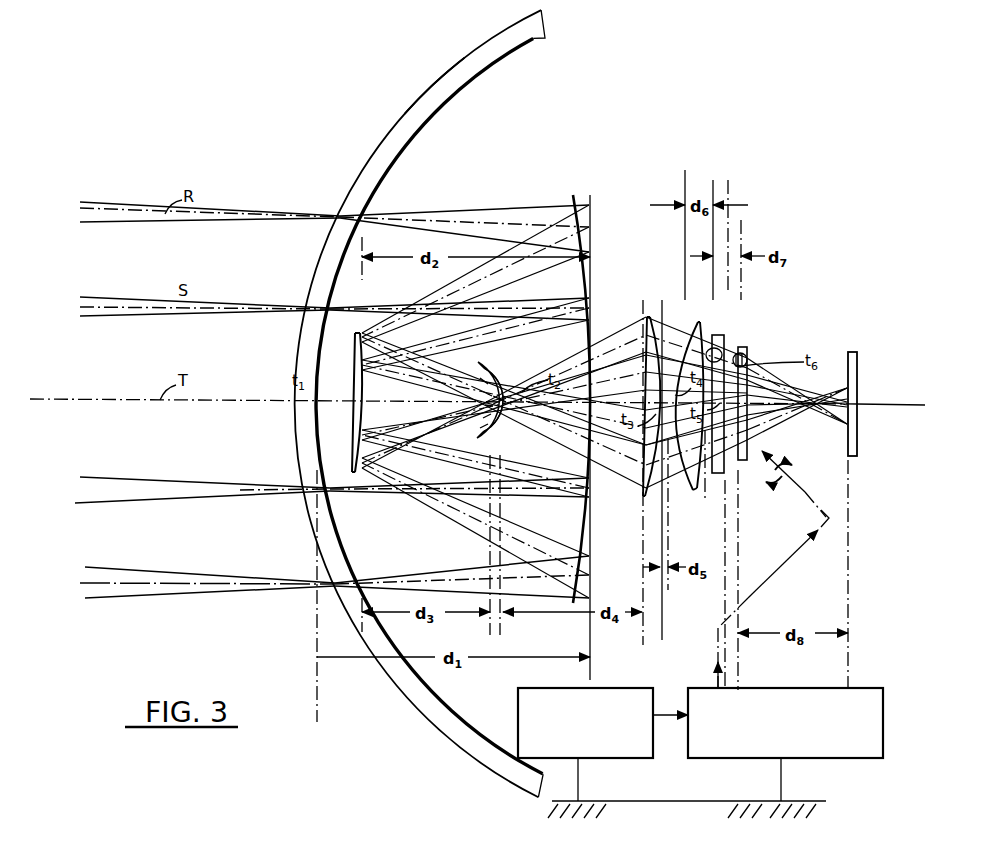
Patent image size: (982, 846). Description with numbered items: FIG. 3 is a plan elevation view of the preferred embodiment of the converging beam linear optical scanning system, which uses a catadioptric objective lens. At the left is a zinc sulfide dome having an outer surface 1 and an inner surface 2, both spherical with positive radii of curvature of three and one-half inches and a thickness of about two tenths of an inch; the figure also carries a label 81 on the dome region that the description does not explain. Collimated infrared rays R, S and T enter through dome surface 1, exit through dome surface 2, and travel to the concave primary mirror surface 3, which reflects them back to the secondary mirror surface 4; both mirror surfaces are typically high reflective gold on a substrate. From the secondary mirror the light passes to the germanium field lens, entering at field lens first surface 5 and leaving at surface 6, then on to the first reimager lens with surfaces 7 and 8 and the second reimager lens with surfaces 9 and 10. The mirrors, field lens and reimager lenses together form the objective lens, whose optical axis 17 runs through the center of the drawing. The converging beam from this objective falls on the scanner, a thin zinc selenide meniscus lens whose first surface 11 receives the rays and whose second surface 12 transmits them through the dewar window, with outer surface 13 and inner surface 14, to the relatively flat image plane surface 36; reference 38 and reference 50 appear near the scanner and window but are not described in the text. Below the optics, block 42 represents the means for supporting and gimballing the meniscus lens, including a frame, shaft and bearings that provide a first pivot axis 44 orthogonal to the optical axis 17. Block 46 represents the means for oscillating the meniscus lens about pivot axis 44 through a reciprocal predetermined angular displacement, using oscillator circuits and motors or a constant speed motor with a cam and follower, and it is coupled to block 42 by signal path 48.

The dome surface 1 is at (537, 22).
The dome surface 2 is at (517, 48).
The dome outer surface 81 is at (427, 100).
The primary mirror surface 3 is at (570, 197).
The secondary mirror surface 4 is at (357, 332).
The field lens first surface 5 is at (482, 373).
The field lens surface 6 is at (493, 374).
The reimager 1 lens surface 7 is at (644, 330).
The reimager 1 lens surface 8 is at (652, 318).
The reimager 2 lens surface 9 is at (698, 325).
The reimager 2 lens surface 10 is at (719, 335).
The scanner lens surface 11 is at (743, 347).
The scanner second surface 12 is at (722, 352).
The dewar window surface 13 is at (746, 360).
The dewar window inner surface 14 is at (745, 367).
The optical axis 17 is at (275, 400).
The image plane surface 36 is at (854, 360).
The lens axis 38 is at (723, 478).
The means for supporting and gimballing 42 is at (868, 727).
The first pivot axis 44 is at (796, 482).
The means for oscillating 46 is at (628, 710).
The signal path 48 is at (661, 712).
The gimbal axis 50 is at (745, 462).